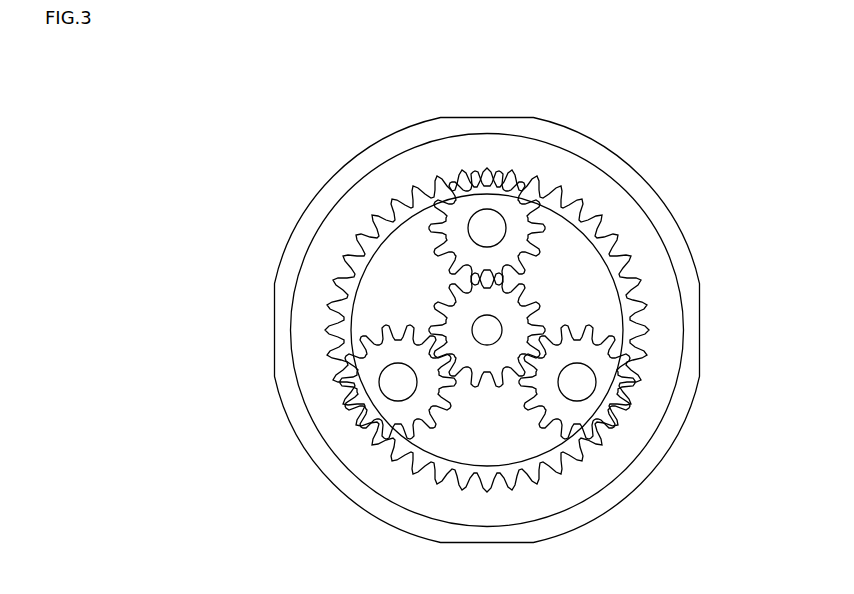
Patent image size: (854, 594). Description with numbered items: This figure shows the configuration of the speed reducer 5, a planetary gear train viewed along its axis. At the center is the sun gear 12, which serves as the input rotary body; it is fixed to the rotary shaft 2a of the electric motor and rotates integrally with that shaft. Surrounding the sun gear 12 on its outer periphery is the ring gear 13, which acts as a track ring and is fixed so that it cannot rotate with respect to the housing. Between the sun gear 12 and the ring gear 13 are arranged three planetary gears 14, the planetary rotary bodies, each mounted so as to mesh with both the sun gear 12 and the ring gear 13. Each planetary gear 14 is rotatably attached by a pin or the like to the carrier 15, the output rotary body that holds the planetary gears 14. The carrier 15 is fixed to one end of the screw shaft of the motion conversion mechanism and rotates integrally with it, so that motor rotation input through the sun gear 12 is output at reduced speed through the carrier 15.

The speed reducer 5 is at (631, 140).
The ring gear 13 is at (651, 244).
The carrier 15 is at (385, 300).
The sun gear 12 is at (487, 377).
The rotary shaft 2a is at (491, 328).
The planetary gear 14 is at (439, 197).